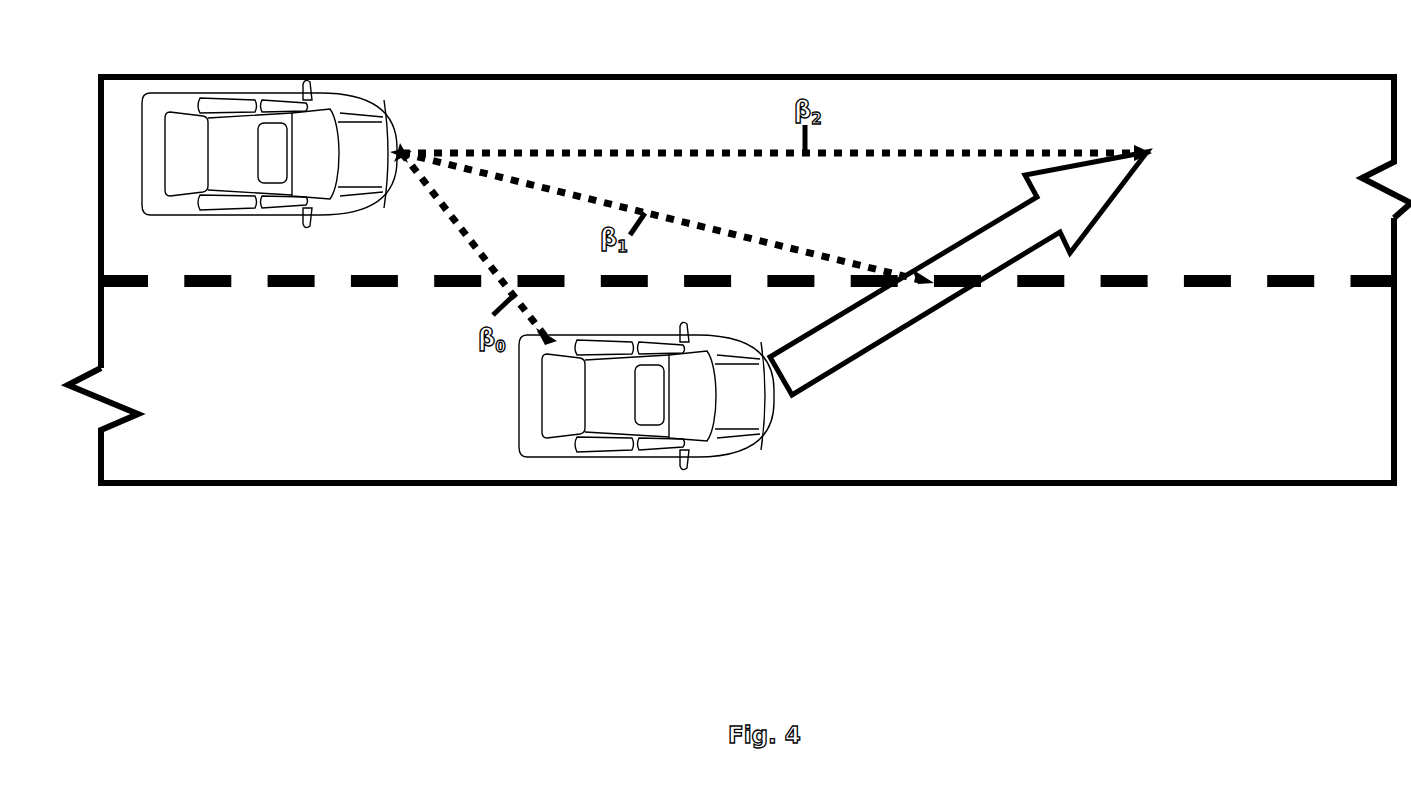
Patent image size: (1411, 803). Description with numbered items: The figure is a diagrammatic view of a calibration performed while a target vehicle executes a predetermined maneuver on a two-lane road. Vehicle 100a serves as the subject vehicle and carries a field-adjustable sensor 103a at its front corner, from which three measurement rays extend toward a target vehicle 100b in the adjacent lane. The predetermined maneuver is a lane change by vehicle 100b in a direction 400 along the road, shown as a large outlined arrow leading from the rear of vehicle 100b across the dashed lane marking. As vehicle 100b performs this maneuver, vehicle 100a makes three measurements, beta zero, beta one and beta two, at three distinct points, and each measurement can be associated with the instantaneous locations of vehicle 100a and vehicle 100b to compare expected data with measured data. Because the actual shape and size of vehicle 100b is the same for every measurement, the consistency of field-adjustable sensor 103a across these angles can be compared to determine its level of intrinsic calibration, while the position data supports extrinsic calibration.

The subject vehicle 100a is at (187, 105).
The field-adjustable sensor 103a is at (410, 135).
The target vehicle 100b is at (612, 422).
The direction 400 is at (973, 263).